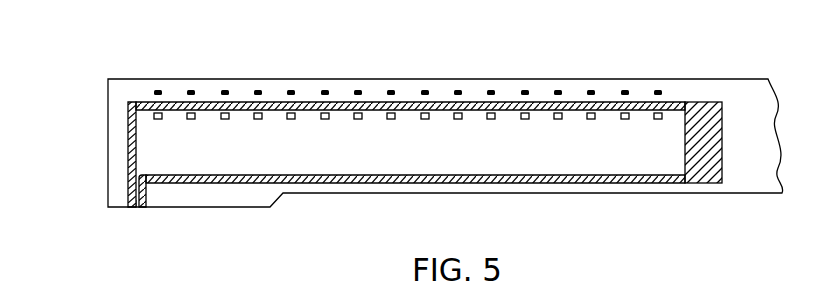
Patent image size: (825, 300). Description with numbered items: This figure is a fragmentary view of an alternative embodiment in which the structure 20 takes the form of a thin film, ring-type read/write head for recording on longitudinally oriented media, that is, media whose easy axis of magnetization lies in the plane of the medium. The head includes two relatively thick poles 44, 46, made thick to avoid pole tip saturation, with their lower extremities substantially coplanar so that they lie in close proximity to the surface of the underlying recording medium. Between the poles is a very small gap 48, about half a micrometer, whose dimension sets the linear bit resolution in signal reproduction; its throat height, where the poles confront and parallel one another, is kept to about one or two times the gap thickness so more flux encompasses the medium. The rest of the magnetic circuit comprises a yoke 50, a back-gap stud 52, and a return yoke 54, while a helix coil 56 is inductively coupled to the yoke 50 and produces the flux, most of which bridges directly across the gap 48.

The structure 20 is at (645, 52).
The pole 44 is at (130, 184).
The pole 46 is at (147, 194).
The gap 48 is at (137, 207).
The yoke 50 is at (313, 102).
The back-gap stud 52 is at (722, 158).
The return yoke 54 is at (383, 175).
The helix coil 56 is at (462, 120).